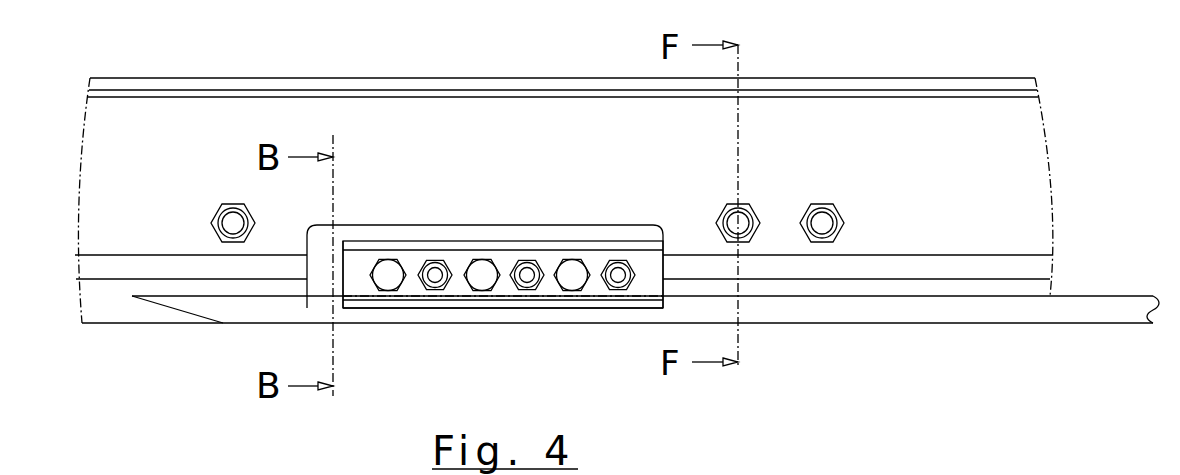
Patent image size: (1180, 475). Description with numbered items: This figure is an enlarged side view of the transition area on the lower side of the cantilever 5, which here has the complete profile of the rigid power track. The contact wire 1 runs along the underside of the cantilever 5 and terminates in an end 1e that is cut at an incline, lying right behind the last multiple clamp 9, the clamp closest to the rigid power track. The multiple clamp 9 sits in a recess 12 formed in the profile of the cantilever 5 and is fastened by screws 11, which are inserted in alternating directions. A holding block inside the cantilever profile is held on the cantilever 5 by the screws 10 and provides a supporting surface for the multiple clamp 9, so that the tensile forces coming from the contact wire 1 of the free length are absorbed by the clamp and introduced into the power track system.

The contact wire 1 is at (1137, 313).
The end of contact wire 1e is at (158, 310).
The cantilever 5 is at (185, 112).
The multiple clamp 9 is at (500, 298).
The screws 10 is at (233, 228).
The screws 11 is at (388, 278).
The recess 12 is at (385, 232).